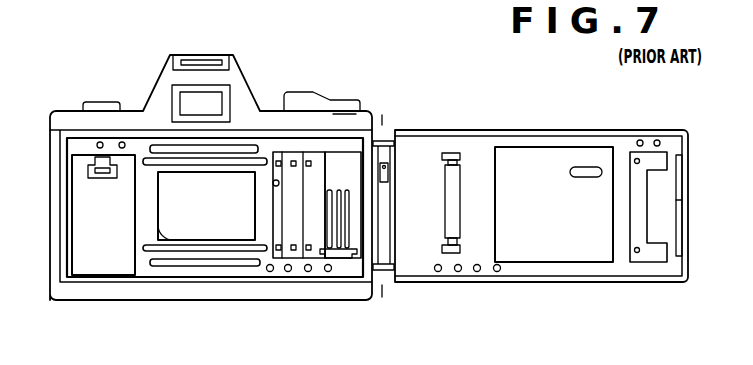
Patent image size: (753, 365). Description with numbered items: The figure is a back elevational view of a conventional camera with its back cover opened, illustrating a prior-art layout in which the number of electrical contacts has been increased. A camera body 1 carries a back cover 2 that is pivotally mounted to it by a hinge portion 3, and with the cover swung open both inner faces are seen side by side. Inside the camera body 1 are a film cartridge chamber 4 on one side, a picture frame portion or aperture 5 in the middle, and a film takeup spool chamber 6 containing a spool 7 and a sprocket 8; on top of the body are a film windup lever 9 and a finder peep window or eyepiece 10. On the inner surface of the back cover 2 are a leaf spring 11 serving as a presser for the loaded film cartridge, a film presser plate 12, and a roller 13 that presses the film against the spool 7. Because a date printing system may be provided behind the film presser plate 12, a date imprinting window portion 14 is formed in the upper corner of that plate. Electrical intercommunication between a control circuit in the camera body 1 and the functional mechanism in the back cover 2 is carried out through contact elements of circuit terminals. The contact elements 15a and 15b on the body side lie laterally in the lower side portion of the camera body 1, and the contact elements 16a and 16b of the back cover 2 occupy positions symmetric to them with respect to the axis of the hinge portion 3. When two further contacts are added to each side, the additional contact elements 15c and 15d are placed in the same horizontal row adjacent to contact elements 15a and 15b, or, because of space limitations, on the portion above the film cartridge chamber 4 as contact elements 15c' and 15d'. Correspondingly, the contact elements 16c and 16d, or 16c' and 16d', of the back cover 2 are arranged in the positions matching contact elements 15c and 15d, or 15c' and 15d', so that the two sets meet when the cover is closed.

The camera body 1 is at (190, 288).
The back cover 2 is at (590, 283).
The hinge portion 3 is at (383, 155).
The film cartridge chamber 4 is at (90, 197).
The picture frame portion (aperture) 5 is at (173, 230).
The film takeup spool chamber 6 is at (273, 184).
The spool 7 is at (339, 162).
The sprocket 8 is at (290, 201).
The film windup lever 9 is at (303, 97).
The finder peep window (eyepiece) 10 is at (208, 102).
The leaf spring 11 is at (658, 162).
The film presser plate 12 is at (512, 163).
The roller 13 is at (450, 178).
The date imprinting window portion 14 is at (583, 170).
The contact element 15a is at (328, 272).
The contact element 15b is at (308, 272).
The contact element 15c is at (286, 308).
The contact element 15d is at (258, 308).
The contact element 15c' is at (125, 97).
The contact element 15d' is at (81, 97).
The contact element 16a is at (437, 272).
The contact element 16b is at (457, 272).
The contact element 16c is at (482, 298).
The contact element 16d is at (510, 298).
The contact element 16c' is at (625, 117).
The contact element 16d' is at (664, 117).